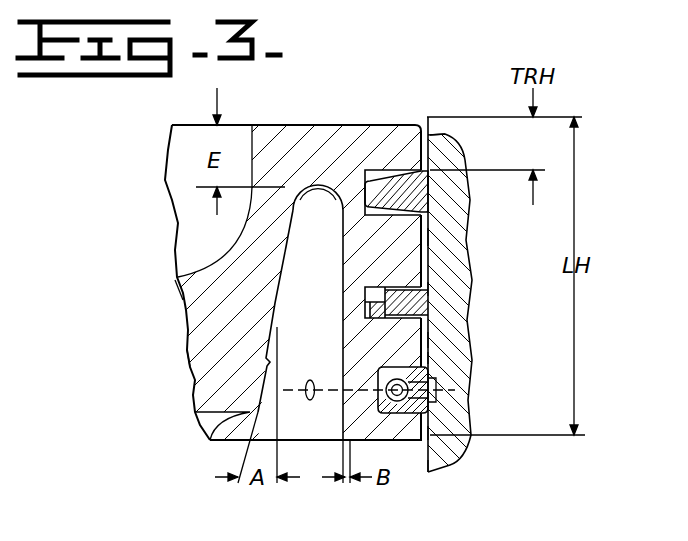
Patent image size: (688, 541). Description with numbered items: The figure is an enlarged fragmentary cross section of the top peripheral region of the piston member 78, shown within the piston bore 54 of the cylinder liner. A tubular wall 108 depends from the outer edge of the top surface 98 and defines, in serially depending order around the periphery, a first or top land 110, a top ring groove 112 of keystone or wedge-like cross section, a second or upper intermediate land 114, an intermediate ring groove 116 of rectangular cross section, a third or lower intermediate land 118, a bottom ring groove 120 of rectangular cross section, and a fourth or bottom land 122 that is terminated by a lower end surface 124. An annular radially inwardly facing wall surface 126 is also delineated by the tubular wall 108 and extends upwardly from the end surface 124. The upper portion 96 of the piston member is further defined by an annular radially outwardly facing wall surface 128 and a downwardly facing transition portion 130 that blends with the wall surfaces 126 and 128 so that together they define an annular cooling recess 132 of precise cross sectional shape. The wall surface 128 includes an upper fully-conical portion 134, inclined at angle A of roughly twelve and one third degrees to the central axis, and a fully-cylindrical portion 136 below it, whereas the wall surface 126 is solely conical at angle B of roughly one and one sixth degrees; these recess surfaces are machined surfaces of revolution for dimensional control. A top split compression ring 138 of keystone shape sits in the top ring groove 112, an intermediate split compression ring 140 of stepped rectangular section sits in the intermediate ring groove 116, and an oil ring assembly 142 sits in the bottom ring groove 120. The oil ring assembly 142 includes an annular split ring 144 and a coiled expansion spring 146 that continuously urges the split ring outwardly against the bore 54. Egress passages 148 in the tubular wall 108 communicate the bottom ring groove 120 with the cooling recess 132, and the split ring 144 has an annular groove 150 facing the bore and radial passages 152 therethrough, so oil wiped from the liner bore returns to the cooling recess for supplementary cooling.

The piston bore 54 is at (427, 135).
The piston member 78 is at (180, 305).
The upper portion of the piston member 96 is at (192, 368).
The top surface 98 is at (330, 125).
The tubular wall 108 is at (390, 172).
The first or top land 110 is at (440, 150).
The top ring groove 112 is at (438, 183).
The second or upper intermediate land 114 is at (435, 236).
The intermediate ring groove 116 is at (440, 290).
The third or lower intermediate land 118 is at (436, 340).
The bottom ring groove 120 is at (440, 357).
The fourth or bottom land 122 is at (432, 432).
The lower end surface 124 is at (415, 445).
The annular radially inwardly facing wall surface 126 is at (336, 265).
The annular radially outwardly facing wall surface 128 is at (273, 303).
The downwardly facing transition portion 130 is at (336, 200).
The annular cooling recess 132 is at (343, 422).
The upper fully-conical portion 134 is at (289, 252).
The fully-cylindrical portion 136 is at (283, 333).
The top split compression ring 138 is at (440, 200).
The intermediate split compression ring 140 is at (415, 305).
The oil ring assembly 142 is at (430, 378).
The annular split ring 144 is at (426, 405).
The coiled expansion spring 146 is at (395, 443).
The egress passages 148 is at (320, 348).
The annular groove 150 is at (412, 393).
The radial passages 152 is at (413, 383).